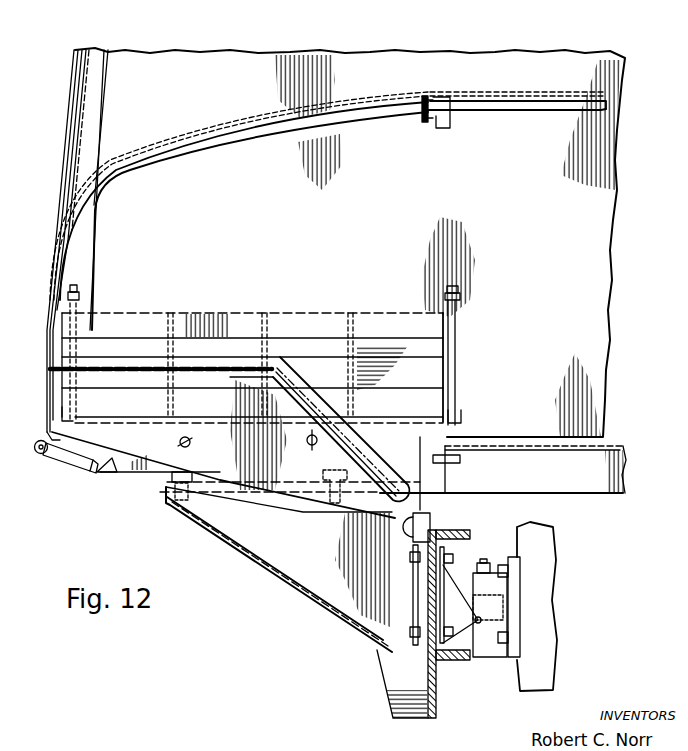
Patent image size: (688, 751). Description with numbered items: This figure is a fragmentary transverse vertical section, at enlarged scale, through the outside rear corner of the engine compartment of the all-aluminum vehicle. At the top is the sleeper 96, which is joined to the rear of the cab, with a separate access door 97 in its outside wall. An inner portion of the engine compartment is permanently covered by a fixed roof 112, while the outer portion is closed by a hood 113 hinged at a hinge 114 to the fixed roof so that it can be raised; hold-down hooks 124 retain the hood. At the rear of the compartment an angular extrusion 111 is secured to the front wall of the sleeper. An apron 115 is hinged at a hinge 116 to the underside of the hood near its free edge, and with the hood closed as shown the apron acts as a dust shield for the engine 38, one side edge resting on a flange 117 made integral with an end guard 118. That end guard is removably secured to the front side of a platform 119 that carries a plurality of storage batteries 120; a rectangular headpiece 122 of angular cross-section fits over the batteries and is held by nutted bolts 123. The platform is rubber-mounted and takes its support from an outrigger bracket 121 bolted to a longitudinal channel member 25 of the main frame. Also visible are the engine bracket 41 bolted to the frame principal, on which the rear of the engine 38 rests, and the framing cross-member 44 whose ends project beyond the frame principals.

The sleeper 96 is at (192, 58).
The access door 97 is at (80, 81).
The hood 113 is at (221, 128).
The hinge 114 is at (428, 96).
The fixed roof 112 is at (502, 92).
The extrusion 111 is at (522, 104).
The rectangular headpiece 122 is at (133, 325).
The nutted bolts 123 is at (460, 288).
The storage batteries 120 is at (338, 353).
The hinge 116 is at (57, 360).
The apron 115 is at (285, 378).
The flange 117 is at (352, 453).
The platform 119 is at (450, 457).
The framing cross-member 44 is at (572, 492).
The hold-down hooks 124 is at (62, 457).
The end guard 118 is at (178, 452).
The outrigger bracket 121 is at (292, 586).
The longitudinal channel member 25 is at (468, 532).
The bracket 41 is at (455, 578).
The engine 38 is at (564, 600).